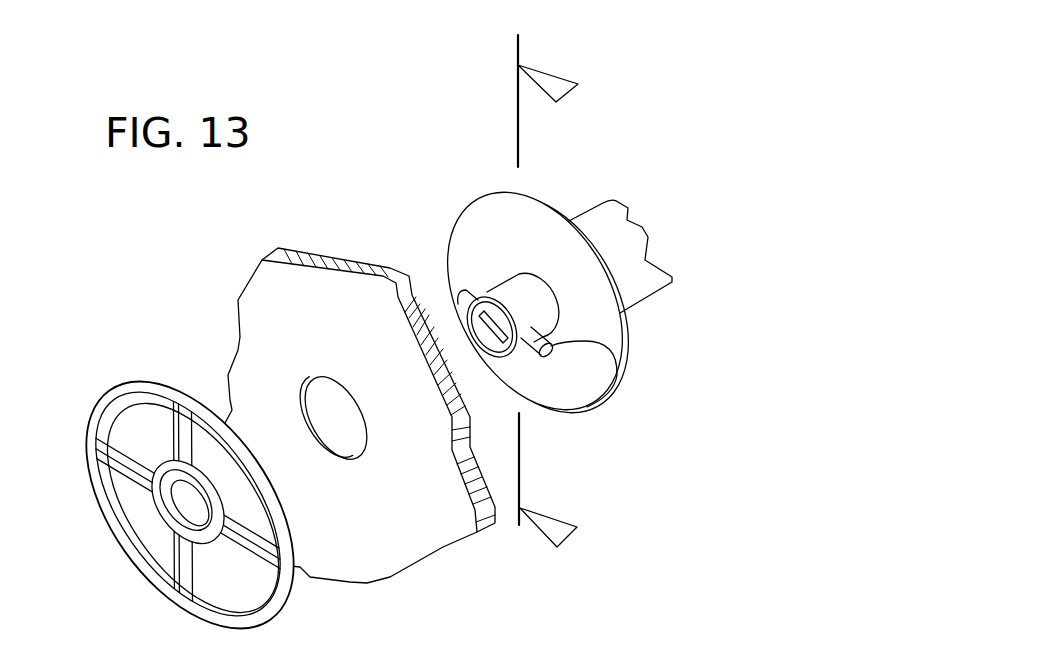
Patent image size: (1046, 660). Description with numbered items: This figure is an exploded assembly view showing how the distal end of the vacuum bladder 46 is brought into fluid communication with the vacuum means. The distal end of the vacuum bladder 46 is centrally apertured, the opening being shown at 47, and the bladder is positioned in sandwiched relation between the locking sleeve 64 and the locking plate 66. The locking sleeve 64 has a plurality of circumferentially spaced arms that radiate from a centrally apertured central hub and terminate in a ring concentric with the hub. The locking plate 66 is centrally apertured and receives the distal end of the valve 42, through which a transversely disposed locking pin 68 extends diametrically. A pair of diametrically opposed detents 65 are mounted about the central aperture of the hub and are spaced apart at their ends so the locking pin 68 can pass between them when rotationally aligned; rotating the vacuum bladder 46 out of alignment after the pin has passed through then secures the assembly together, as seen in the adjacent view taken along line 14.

The section view line 14 is at (540, 79).
The valve 42 is at (630, 267).
The vacuum bladder 46 is at (417, 517).
The central aperture of vacuum bladder 47 is at (312, 398).
The locking sleeve 64 is at (103, 410).
The detents 65 is at (170, 510).
The locking plate 66 is at (570, 380).
The locking pin 68 is at (622, 372).